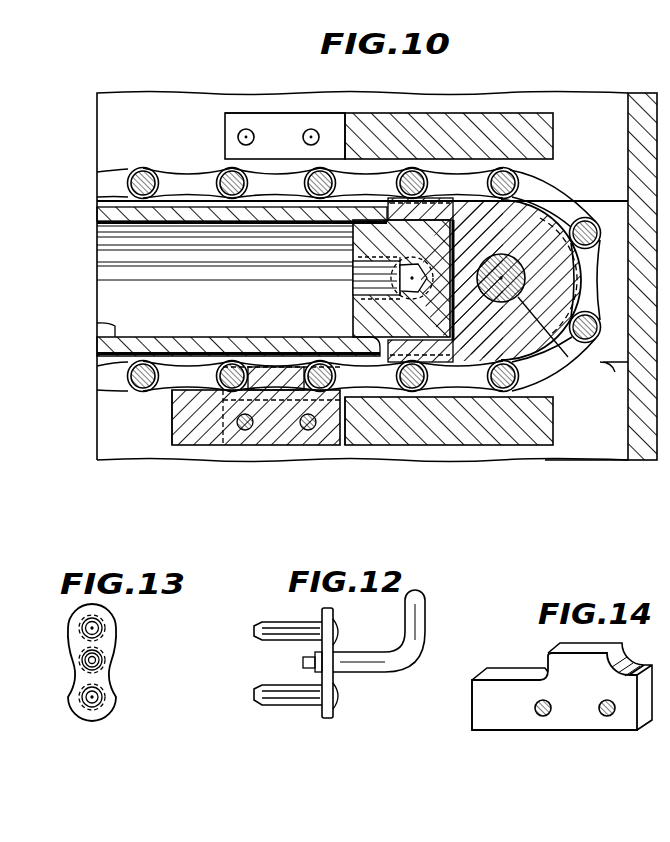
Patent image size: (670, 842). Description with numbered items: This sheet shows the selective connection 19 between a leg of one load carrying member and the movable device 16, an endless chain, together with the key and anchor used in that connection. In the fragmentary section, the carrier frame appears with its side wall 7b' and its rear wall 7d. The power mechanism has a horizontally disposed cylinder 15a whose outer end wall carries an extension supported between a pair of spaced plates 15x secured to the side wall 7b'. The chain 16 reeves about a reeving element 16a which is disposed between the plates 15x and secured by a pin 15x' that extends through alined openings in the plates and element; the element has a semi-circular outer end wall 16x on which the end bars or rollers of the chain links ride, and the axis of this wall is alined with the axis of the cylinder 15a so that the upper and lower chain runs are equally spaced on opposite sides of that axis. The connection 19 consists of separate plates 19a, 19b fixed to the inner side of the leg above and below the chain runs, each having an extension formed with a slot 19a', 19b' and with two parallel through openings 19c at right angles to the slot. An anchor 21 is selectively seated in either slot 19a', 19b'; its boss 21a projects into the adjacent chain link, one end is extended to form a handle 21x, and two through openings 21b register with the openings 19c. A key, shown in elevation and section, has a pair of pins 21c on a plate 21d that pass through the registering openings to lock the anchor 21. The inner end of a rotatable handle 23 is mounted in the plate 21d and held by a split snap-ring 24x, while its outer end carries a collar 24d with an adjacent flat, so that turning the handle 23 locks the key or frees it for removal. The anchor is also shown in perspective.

In FIG. 10, the side wall 7b' is at (631, 295).
In FIG. 10, the rear wall 7d is at (578, 450).
In FIG. 10, the selective connection 19 is at (206, 151).
In FIG. 10, the openings 19c is at (248, 129).
In FIG. 10, the slot 19a' is at (286, 91).
In FIG. 10, the plate 19a is at (449, 110).
In FIG. 10, the plate 19b is at (449, 447).
In FIG. 10, the slot 19b' is at (353, 447).
In FIG. 10, the movable device 16 is at (112, 184).
In FIG. 10, the semi-circular outer end wall 16x is at (597, 306).
In FIG. 10, the reeving element 16a is at (565, 200).
In FIG. 10, the spaced plates 15x is at (358, 200).
In FIG. 10, the cylinder 15a is at (118, 332).
In FIG. 10, the pin 15x' is at (506, 295).
In FIG. 10, the anchor 21 is at (268, 445).
In FIG. 14, the anchor 21 is at (590, 728).
In FIG. 10, the boss 21a is at (266, 367).
In FIG. 14, the boss 21a is at (555, 655).
In FIG. 10, the handle 21x is at (190, 440).
In FIG. 14, the handle 21x is at (483, 727).
In FIG. 10, the openings 21b is at (243, 431).
In FIG. 14, the openings 21b is at (602, 700).
In FIG. 10, the pins 21c is at (306, 431).
In FIG. 13, the pins 21c is at (103, 630).
In FIG. 12, the pins 21c is at (240, 655).
In FIG. 13, the plate 21d is at (105, 713).
In FIG. 12, the plate 21d is at (333, 718).
In FIG. 13, the split snap-ring 24x is at (103, 661).
In FIG. 12, the handle 23 is at (426, 618).
In FIG. 12, the outer collar 24d is at (310, 672).